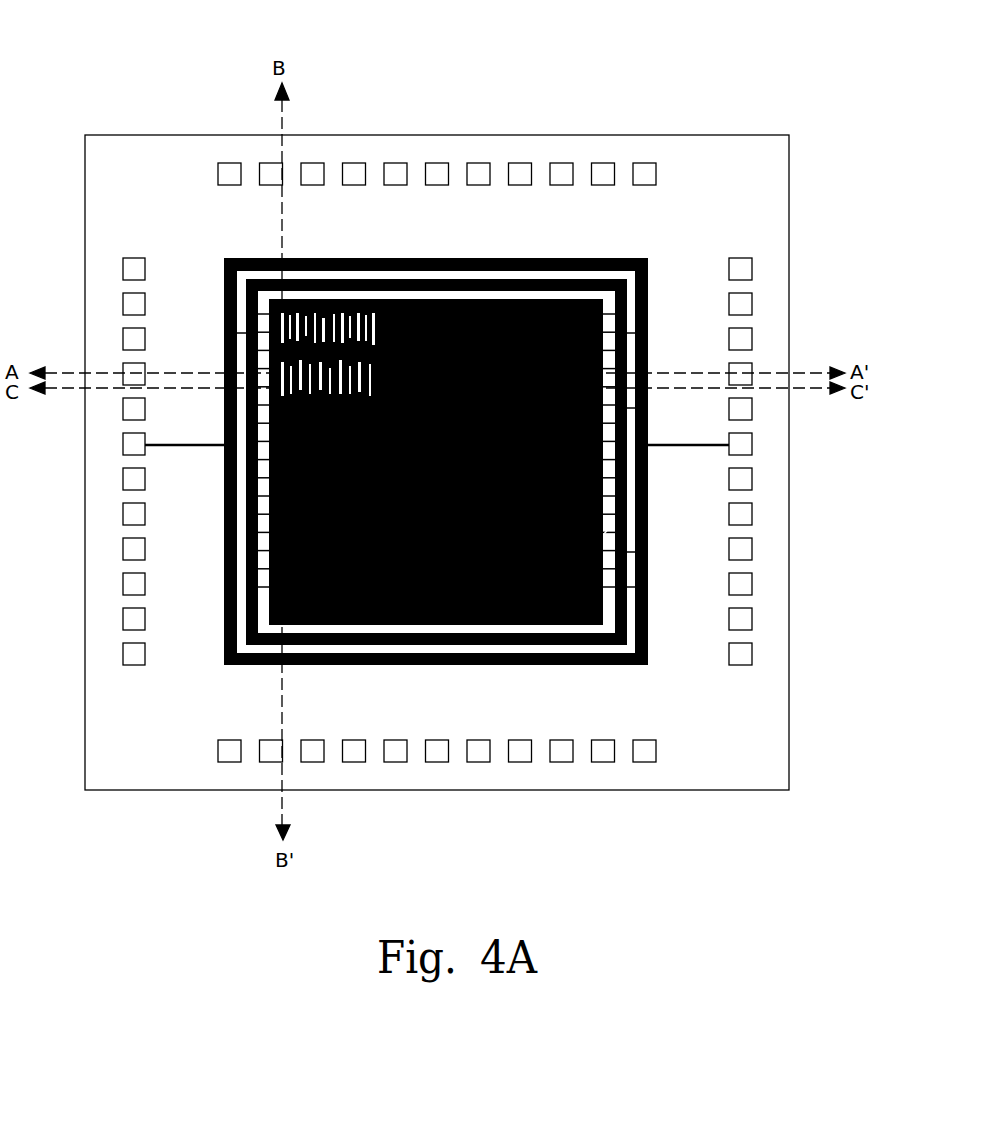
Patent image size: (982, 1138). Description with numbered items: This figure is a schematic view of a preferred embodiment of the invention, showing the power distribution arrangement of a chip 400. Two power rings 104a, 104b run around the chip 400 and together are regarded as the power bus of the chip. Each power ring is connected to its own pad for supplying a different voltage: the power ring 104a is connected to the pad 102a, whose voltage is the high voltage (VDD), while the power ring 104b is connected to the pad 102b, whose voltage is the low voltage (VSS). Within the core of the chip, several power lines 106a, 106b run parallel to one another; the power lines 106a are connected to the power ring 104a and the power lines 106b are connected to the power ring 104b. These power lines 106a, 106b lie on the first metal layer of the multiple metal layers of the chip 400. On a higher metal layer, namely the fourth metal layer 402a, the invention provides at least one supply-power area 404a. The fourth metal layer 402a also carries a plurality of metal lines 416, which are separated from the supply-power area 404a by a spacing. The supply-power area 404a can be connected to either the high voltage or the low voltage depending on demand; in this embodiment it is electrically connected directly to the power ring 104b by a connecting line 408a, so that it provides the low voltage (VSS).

The chip 400 is at (163, 99).
The pad 102a is at (122, 447).
The pad 102b is at (752, 445).
The power ring 104a is at (225, 642).
The power ring 104b is at (607, 648).
The power lines 106a is at (237, 552).
The power lines 106b is at (640, 423).
The fourth metal layer 402a is at (485, 302).
The supply-power area 404a is at (543, 302).
The connecting line 408a is at (648, 556).
The metal lines 416 is at (310, 302).